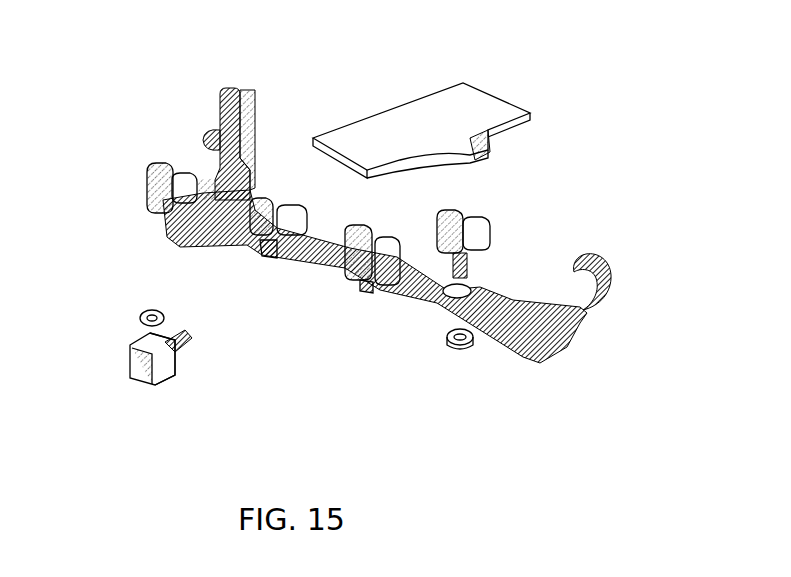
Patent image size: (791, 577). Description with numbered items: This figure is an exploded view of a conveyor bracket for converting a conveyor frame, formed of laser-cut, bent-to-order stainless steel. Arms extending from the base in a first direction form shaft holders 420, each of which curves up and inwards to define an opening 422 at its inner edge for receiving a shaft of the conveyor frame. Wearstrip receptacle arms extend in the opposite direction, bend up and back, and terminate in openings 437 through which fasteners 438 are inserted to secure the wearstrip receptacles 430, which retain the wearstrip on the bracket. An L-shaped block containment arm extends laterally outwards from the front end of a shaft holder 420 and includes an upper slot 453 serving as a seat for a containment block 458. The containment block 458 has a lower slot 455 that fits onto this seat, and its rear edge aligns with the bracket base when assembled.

The shaft holder 420 is at (590, 325).
The opening 422 is at (215, 147).
The wearstrip receptacle 430 is at (258, 210).
The opening 437 is at (458, 292).
The fastener 438 is at (470, 262).
The upper slot 453 is at (240, 88).
The lower slot 455 is at (478, 162).
The containment block 458 is at (478, 124).